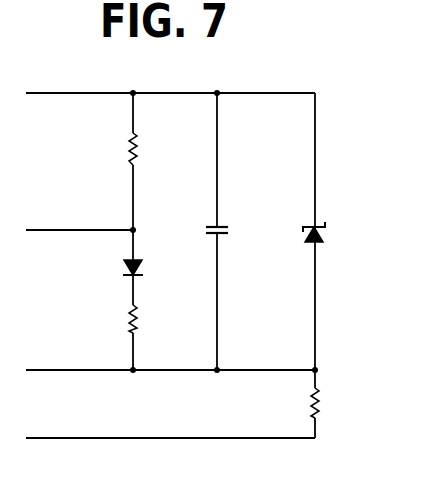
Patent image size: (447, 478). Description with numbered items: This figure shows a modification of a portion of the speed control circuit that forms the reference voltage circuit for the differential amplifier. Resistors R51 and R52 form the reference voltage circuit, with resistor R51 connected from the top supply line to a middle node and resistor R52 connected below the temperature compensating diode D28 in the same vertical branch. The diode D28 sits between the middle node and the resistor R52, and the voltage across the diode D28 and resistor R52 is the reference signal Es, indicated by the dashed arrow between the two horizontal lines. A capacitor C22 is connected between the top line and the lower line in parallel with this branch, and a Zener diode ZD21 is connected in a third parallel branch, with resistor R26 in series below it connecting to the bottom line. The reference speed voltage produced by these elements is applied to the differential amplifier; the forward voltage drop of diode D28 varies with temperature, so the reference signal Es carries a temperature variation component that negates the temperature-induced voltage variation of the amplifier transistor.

The resistor R51 is at (138, 143).
The temperature compensating diode D28 is at (145, 268).
The resistor R52 is at (138, 320).
The capacitor C22 is at (230, 231).
The Zener diode ZD21 is at (327, 233).
The resistor R26 is at (320, 401).
The reference signal Es is at (61, 239).